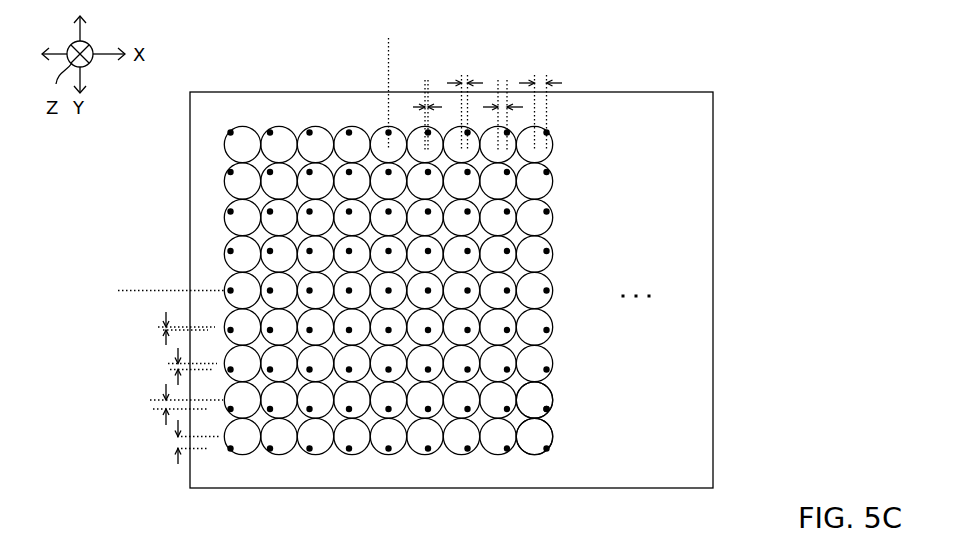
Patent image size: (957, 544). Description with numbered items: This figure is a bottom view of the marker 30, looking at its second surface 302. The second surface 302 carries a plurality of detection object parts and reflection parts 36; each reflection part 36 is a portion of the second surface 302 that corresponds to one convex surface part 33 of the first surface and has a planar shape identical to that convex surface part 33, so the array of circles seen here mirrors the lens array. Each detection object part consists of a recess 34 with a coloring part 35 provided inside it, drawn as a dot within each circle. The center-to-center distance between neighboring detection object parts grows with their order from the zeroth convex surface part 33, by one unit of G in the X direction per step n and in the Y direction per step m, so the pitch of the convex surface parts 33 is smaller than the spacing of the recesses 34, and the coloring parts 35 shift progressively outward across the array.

The marker 30 is at (754, 78).
The second surface 302 is at (690, 177).
The convex surface part 33 is at (228, 211).
The recess 34 is at (666, 394).
The coloring part 35 is at (553, 413).
The reflection part 36 is at (537, 434).